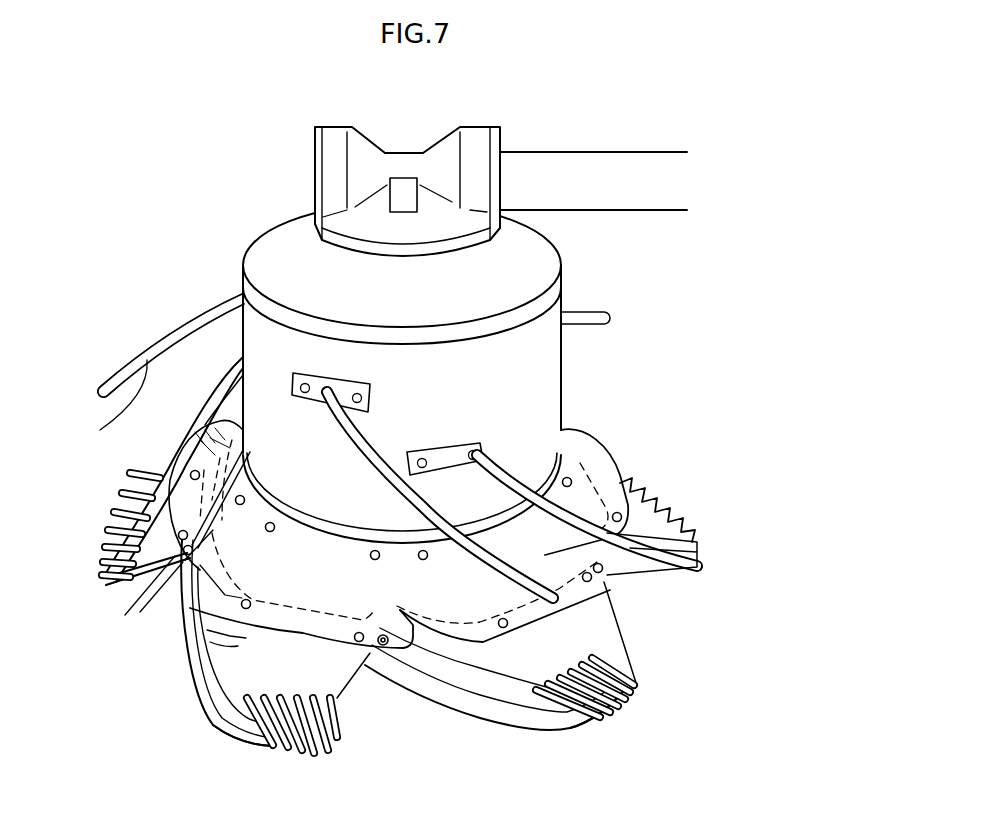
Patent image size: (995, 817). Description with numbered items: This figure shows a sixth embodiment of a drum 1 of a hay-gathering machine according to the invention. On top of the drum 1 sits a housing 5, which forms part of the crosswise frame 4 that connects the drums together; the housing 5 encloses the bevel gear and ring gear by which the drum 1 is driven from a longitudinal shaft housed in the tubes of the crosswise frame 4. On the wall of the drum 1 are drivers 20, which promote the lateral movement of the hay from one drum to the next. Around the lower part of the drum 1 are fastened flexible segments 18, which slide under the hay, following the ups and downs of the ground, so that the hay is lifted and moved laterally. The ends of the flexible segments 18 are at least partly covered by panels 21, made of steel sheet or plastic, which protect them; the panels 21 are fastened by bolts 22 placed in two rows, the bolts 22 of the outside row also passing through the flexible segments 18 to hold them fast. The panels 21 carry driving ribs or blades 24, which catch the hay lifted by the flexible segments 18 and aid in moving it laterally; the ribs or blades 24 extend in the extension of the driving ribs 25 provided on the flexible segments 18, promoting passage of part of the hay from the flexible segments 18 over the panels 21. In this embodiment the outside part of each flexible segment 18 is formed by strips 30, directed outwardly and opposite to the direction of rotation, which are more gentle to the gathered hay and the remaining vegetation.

The drum 1 is at (298, 248).
The crosswise frame 4 is at (576, 146).
The housing 5 is at (335, 143).
The flexible segment 18 is at (340, 700).
The driver 20 is at (160, 455).
The panel 21 is at (600, 472).
The bolt 22 is at (372, 552).
The driving rib or blade 24 is at (213, 530).
The driving rib 25 is at (213, 693).
The strip 30 is at (285, 745).